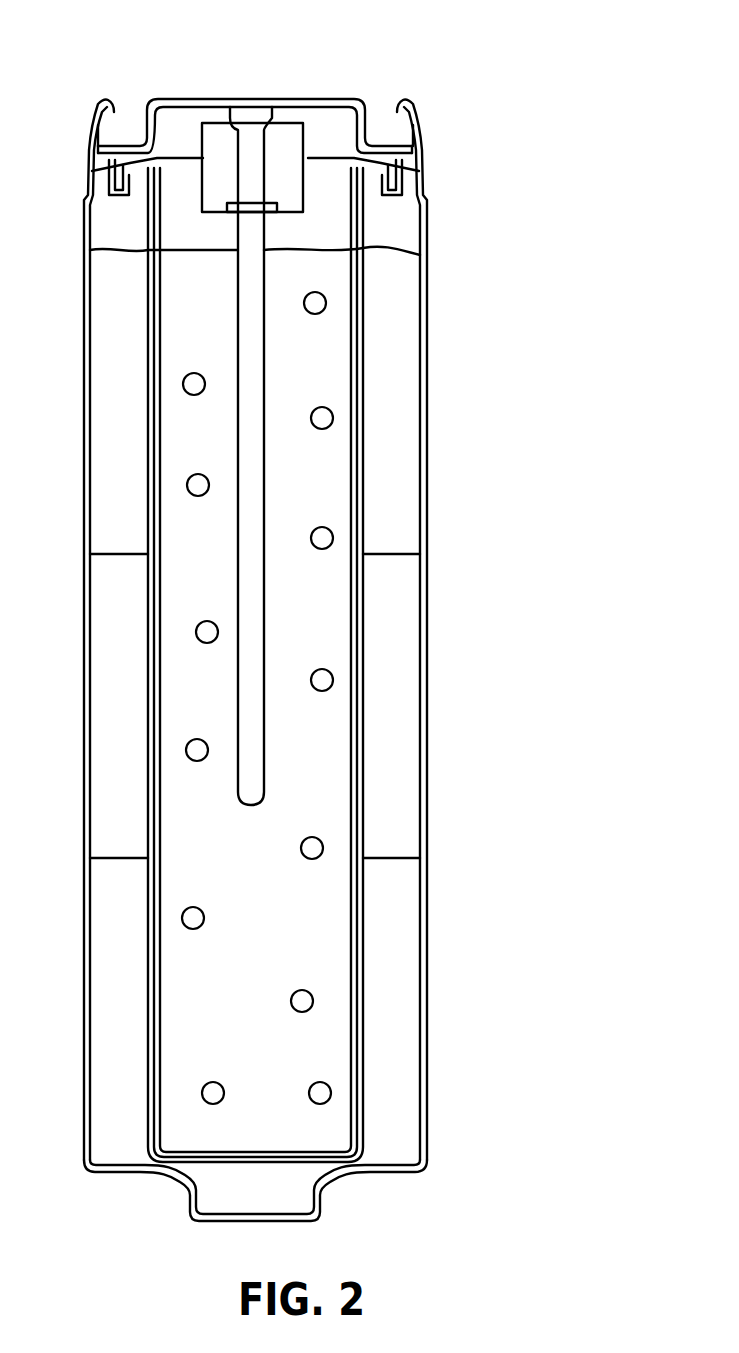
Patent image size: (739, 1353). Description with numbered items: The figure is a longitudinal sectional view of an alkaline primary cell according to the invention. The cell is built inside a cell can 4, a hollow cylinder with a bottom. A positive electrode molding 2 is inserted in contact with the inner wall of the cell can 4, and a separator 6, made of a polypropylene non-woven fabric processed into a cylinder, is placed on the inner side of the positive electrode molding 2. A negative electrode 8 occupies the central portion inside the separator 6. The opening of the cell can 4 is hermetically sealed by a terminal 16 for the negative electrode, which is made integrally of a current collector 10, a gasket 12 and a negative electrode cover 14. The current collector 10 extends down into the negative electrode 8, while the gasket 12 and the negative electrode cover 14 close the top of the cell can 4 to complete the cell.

The positive electrode molding 2 is at (392, 944).
The cell can 4 is at (427, 437).
The separator 6 is at (357, 513).
The negative electrode 8 is at (268, 933).
The current collector 10 is at (253, 608).
The gasket 12 is at (318, 165).
The negative electrode cover 14 is at (313, 97).
The terminal for the negative electrode 16 is at (198, 90).